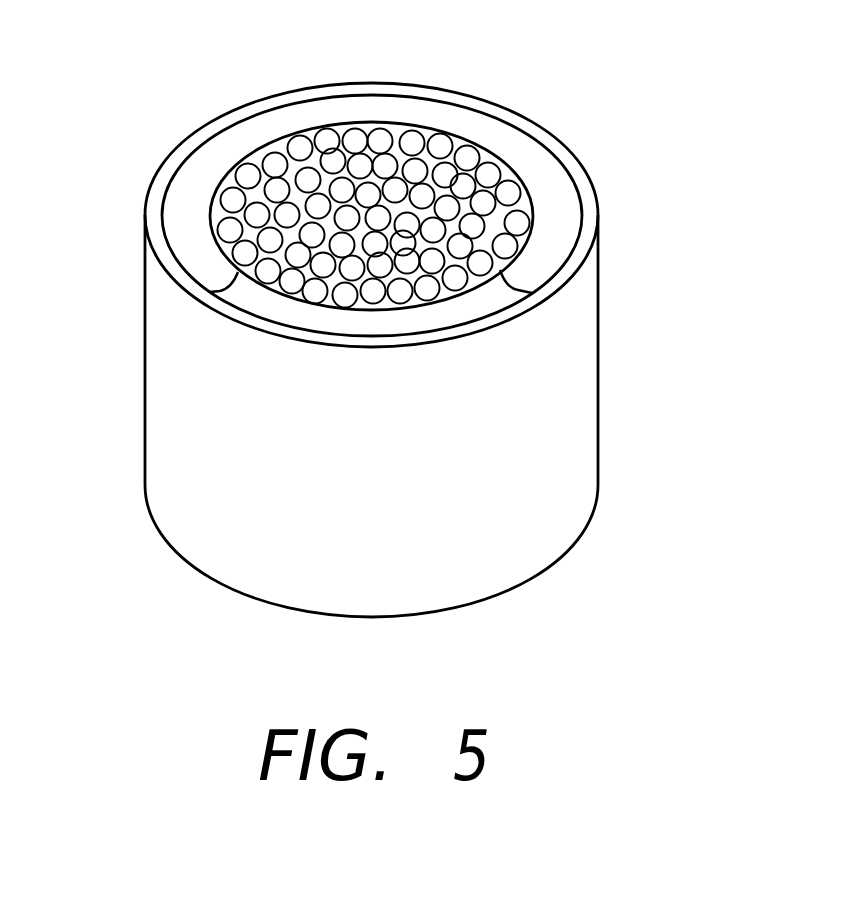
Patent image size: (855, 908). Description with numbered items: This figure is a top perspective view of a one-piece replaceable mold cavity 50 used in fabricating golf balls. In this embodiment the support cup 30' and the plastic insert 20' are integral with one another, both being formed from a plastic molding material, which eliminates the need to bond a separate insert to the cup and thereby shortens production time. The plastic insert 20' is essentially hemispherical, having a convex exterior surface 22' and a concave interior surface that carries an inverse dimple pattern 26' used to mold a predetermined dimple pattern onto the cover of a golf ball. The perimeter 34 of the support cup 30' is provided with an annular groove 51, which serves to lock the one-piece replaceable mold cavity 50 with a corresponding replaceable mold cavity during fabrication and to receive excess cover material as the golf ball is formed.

The one-piece replaceable mold cavity 50 is at (392, 311).
The support cup 30' is at (390, 331).
The perimeter 34 is at (150, 197).
The annular groove 51 is at (201, 168).
The plastic insert 20' is at (393, 157).
The inverse dimple pattern 26' is at (374, 160).
The convex exterior surface 22' is at (422, 91).